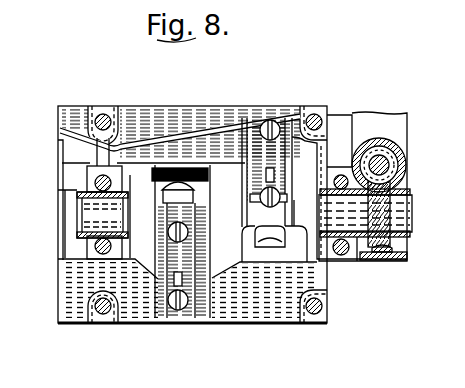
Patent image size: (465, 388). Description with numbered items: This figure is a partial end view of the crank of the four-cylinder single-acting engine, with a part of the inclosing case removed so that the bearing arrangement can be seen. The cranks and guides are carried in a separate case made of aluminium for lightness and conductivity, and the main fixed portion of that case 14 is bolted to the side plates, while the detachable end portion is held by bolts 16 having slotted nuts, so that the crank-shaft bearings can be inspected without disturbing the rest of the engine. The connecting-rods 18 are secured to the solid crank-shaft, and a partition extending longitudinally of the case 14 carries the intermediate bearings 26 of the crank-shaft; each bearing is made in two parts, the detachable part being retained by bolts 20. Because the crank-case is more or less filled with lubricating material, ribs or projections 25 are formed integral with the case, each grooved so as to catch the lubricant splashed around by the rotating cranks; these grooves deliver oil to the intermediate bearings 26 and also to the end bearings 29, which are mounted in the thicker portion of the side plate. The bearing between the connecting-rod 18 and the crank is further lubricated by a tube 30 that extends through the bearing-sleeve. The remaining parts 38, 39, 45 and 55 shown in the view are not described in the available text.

The case 14 is at (260, 318).
The bolts 16 is at (102, 315).
The connecting-rod 18 is at (282, 214).
The bolts 20 is at (97, 251).
The ribs or projections 25 is at (156, 133).
The intermediate bearings 26 is at (92, 218).
The end bearings 29 is at (327, 258).
The tube 30 is at (199, 316).
The bottom bearing block 38 is at (386, 261).
The worm shaft 39 is at (400, 167).
The worm gear ring 45 is at (400, 150).
The housing side wall 55 is at (58, 188).